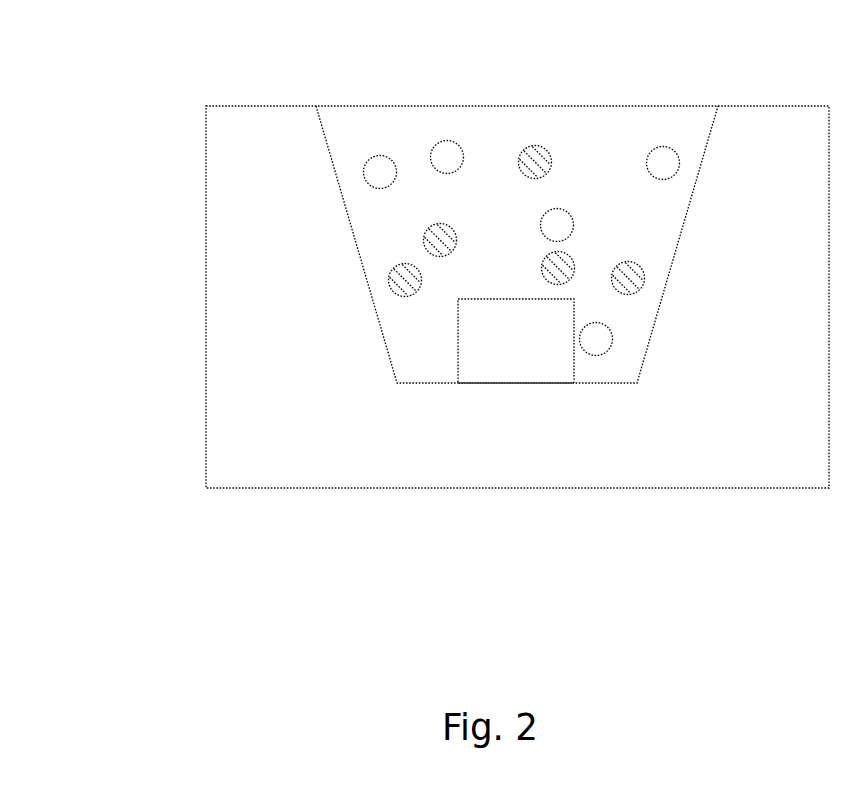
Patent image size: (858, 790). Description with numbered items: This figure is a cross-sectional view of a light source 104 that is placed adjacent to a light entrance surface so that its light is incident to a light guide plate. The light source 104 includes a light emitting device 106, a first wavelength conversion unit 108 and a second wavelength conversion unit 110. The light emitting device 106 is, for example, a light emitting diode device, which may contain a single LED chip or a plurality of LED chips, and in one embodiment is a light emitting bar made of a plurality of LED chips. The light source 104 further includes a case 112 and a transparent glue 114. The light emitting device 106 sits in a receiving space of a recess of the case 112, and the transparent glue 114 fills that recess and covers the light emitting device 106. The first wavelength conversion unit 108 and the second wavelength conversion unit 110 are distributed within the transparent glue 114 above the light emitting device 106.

The light source 104 is at (100, 56).
The light emitting device 106 is at (517, 380).
The first wavelength conversion unit 108 is at (663, 146).
The second wavelength conversion unit 110 is at (533, 146).
The case 112 is at (672, 472).
The transparent glue 114 is at (600, 112).